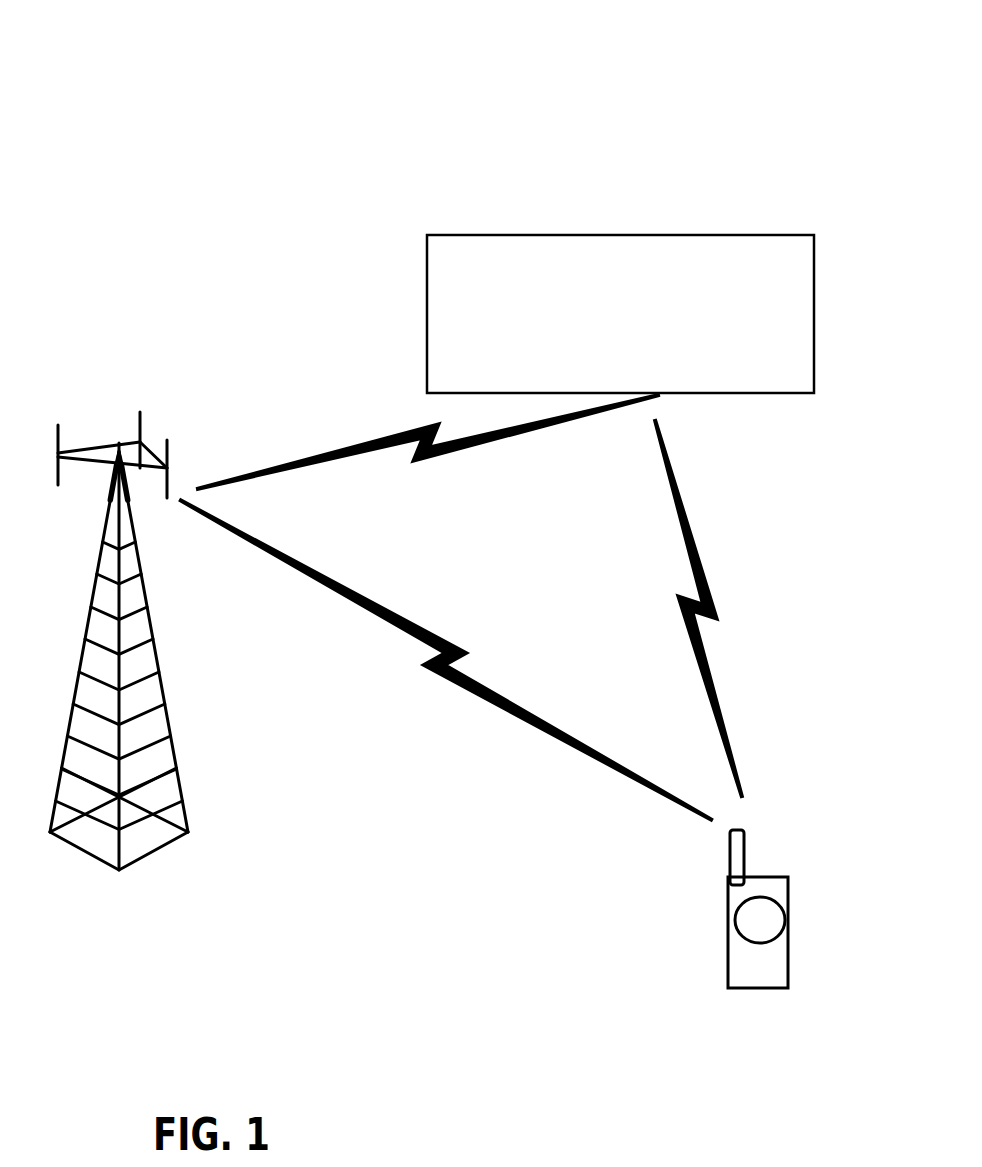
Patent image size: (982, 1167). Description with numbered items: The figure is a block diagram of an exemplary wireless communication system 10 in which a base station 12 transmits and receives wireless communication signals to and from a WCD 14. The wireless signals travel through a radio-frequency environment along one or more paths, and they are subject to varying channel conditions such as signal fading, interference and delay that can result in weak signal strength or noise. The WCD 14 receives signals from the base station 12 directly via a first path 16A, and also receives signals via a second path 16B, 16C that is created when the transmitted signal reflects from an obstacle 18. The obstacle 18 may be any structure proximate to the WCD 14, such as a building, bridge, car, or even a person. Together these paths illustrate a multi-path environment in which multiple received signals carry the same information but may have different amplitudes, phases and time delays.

The wireless communication system 10 is at (277, 102).
The base station 12 is at (193, 807).
The WCD 14 is at (808, 861).
The first path 16A is at (337, 585).
The second path 16B is at (362, 441).
The second path 16C is at (673, 477).
The obstacle 18 is at (604, 347).